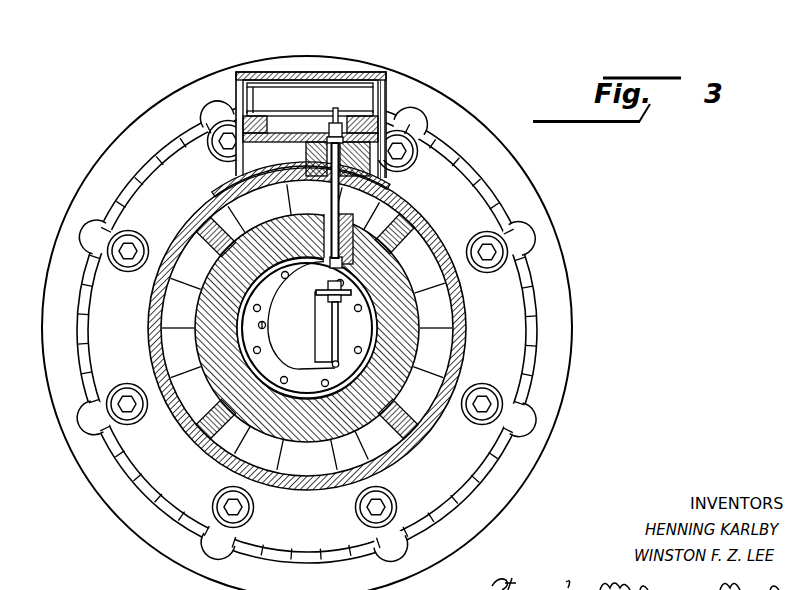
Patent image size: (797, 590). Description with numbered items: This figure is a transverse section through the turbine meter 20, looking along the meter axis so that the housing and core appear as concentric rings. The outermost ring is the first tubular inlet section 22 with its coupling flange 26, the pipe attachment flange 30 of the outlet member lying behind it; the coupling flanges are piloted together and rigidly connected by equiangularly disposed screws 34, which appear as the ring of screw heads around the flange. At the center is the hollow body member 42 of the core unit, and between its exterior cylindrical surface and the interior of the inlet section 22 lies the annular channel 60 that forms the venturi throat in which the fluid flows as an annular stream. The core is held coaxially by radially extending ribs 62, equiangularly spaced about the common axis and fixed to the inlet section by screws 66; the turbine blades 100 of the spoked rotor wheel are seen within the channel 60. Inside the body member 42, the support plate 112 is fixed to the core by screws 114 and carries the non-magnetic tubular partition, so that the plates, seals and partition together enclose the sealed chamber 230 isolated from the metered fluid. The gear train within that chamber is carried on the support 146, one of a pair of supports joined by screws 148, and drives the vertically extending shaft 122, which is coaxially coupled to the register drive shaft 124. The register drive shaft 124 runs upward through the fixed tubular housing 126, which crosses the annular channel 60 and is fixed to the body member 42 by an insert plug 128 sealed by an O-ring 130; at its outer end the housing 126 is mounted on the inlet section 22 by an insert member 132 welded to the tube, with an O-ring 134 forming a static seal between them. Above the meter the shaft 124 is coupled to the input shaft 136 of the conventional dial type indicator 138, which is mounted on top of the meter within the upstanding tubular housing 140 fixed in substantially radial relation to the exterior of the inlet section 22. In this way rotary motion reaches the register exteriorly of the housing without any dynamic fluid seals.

The turbine meter 20 is at (470, 212).
The first tubular inlet section 22 is at (400, 200).
The coupling flange 26 is at (514, 360).
The pipe attachment flange 30 is at (567, 318).
The screws 34 is at (135, 232).
The hollow body member 42 is at (403, 307).
The annular channel 60 is at (455, 303).
The radially extending ribs 62 is at (420, 210).
The screws 66 is at (186, 444).
The turbine blades 100 is at (150, 303).
The support plate 112 is at (250, 289).
The screws 114 is at (283, 326).
The vertically extending shaft 122 is at (339, 327).
The register drive shaft 124 is at (338, 213).
The fixed tubular housing 126 is at (330, 198).
The insert plug 128 is at (372, 208).
The O-ring 130 is at (328, 236).
The insert member 132 is at (303, 152).
The O-ring 134 is at (343, 166).
The input shaft 136 is at (330, 108).
The dial type indicator 138 is at (358, 82).
The upstanding tubular housing 140 is at (389, 92).
The support 146 is at (294, 370).
The screws 148 is at (317, 292).
The sealed chamber 230 is at (254, 430).